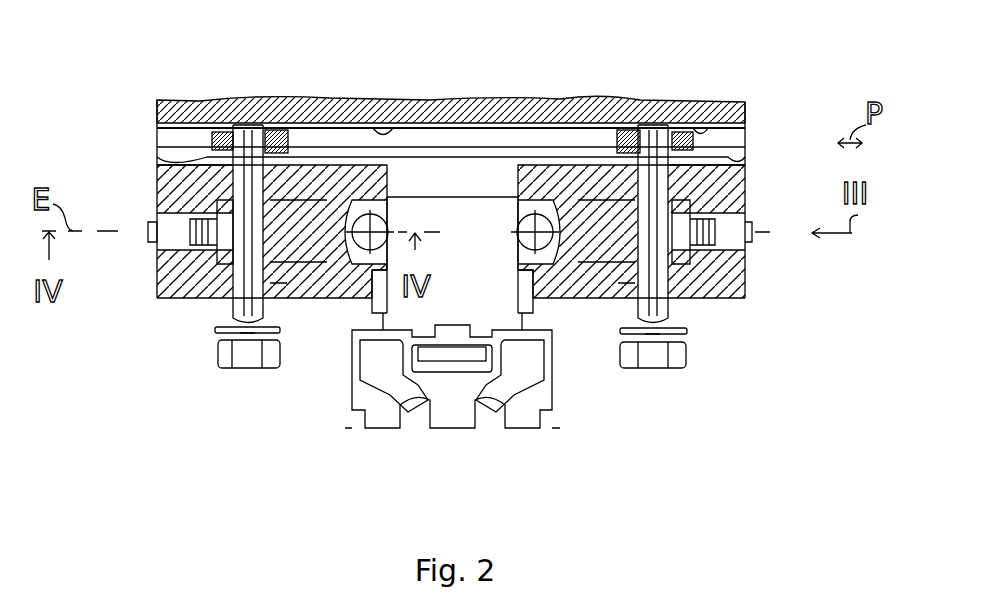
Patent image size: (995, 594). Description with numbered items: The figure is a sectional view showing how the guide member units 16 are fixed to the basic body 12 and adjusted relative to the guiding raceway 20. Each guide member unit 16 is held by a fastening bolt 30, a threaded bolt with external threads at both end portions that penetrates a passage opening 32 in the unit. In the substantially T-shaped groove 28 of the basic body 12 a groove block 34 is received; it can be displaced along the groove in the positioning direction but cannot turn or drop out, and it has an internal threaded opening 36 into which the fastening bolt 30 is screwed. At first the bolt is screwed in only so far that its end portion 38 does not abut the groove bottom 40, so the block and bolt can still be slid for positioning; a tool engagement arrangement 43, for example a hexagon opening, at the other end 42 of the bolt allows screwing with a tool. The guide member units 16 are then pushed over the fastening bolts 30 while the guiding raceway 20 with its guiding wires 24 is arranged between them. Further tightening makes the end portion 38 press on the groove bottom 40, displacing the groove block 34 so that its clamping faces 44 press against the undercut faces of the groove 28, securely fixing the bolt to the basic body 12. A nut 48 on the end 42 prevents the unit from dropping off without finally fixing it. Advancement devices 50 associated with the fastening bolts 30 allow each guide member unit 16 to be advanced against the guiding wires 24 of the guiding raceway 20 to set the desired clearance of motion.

The basic body 12 is at (747, 110).
The guide member unit 16 is at (746, 279).
The guiding raceway 20 is at (377, 300).
The guiding wire 24 is at (374, 212).
The groove 28 is at (746, 140).
The fastening bolt 30 is at (230, 315).
The passage opening 32 is at (746, 196).
The groove block 34 is at (210, 98).
The internal threaded opening 36 is at (248, 128).
The end portion 38 is at (288, 125).
The groove bottom 40 is at (386, 197).
The other end 42 is at (274, 328).
The tool engagement arrangement 43 is at (248, 336).
The clamping face 44 is at (746, 160).
The nut 48 is at (225, 368).
The advancement device 50 is at (185, 268).